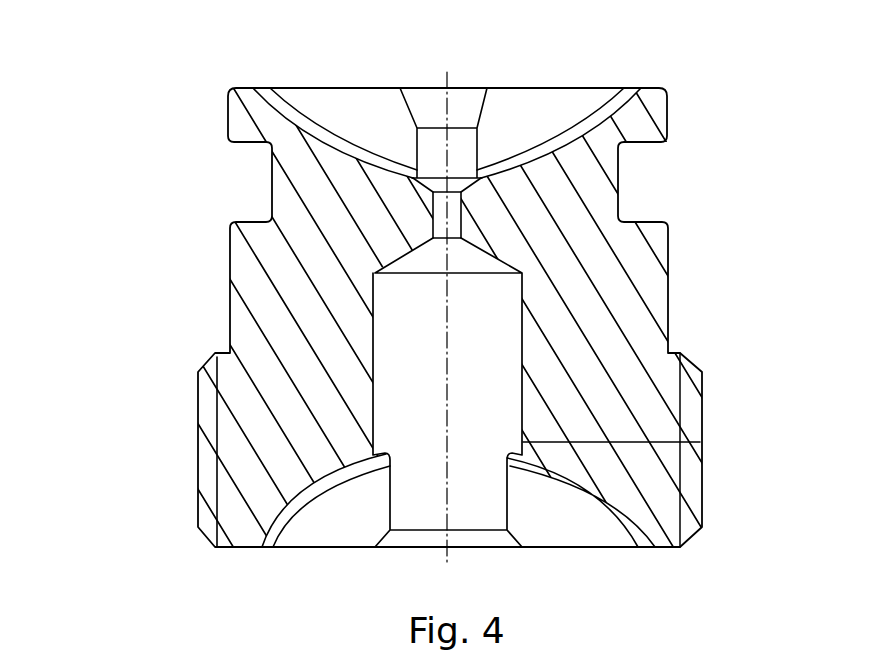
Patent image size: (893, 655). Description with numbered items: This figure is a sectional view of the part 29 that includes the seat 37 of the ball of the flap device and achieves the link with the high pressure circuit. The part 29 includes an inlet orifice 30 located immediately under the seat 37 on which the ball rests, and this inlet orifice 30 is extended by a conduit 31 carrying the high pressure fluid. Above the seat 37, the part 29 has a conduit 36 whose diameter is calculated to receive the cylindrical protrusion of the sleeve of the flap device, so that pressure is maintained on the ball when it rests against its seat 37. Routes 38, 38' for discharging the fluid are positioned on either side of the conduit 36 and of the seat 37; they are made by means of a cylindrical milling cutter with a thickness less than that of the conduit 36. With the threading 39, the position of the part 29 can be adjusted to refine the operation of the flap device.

The part 29 is at (670, 302).
The inlet orifice 30 is at (444, 214).
The conduit 31 is at (478, 385).
The conduit 36 is at (460, 105).
The seat 37 is at (455, 188).
The route 38 is at (560, 95).
The route 38' is at (335, 98).
The threading 39 is at (196, 448).